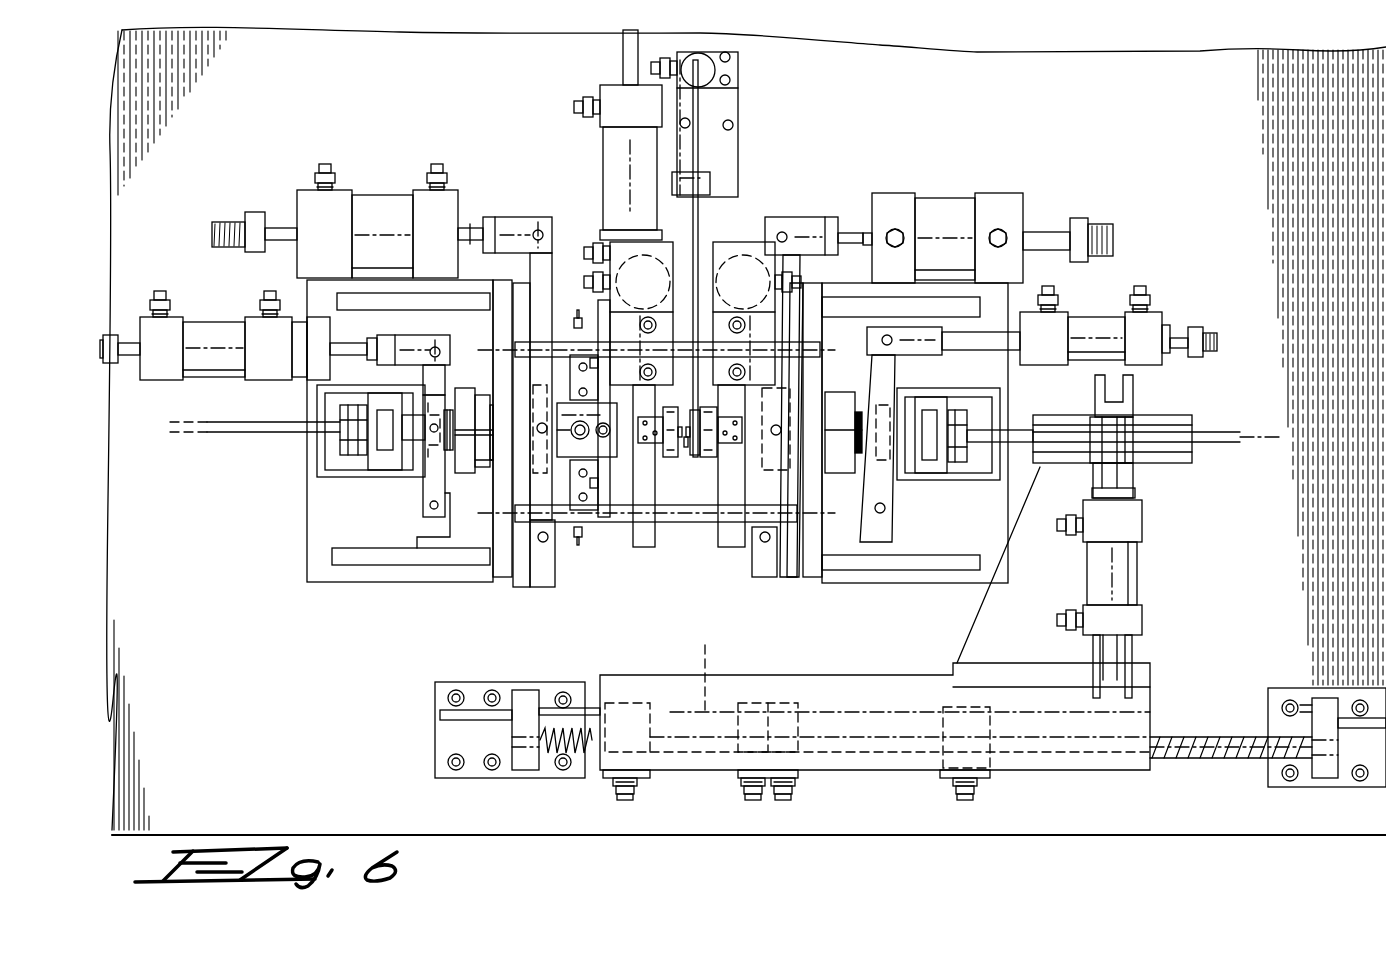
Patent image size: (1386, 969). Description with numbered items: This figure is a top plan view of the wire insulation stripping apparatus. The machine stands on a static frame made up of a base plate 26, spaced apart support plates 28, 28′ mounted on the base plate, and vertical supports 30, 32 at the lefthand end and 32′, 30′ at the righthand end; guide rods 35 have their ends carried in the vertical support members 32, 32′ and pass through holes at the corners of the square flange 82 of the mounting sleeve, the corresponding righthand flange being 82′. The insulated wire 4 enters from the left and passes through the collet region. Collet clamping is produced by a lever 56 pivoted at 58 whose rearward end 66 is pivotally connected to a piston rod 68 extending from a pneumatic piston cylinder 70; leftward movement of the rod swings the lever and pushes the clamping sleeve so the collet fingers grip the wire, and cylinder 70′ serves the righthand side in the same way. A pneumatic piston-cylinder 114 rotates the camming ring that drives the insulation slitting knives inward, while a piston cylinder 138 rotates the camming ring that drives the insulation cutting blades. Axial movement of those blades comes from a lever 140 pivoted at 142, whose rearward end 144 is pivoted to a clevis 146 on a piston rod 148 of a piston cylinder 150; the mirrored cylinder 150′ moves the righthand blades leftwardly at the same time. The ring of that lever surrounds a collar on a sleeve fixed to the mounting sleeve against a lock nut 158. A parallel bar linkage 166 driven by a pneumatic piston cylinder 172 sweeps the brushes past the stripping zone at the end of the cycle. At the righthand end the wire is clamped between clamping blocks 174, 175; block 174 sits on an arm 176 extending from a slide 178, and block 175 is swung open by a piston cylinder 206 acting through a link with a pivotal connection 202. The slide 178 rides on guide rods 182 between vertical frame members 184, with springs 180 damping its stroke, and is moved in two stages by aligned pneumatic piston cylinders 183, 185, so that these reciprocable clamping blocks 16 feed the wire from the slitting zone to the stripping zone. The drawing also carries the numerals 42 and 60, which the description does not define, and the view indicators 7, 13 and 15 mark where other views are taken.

The insulated wire 4 is at (237, 435).
The section line 7 is at (292, 430).
The section line 13 is at (1241, 320).
The section line 15 is at (438, 813).
The reciprocable clamping blocks 16 is at (1180, 410).
The base plate 26 is at (740, 823).
The support plate 28 is at (310, 530).
The support plate 28′ is at (888, 578).
The vertical support 30 is at (385, 462).
The vertical support 30′ is at (925, 465).
The vertical support 32 is at (500, 580).
The vertical support 32′ is at (810, 573).
The guide rods 35 is at (618, 515).
The collet nut 42 is at (347, 438).
The lever 56 is at (430, 380).
The pivot 58 is at (430, 506).
The bracket 60 is at (427, 530).
The rearward end of lever 66 is at (438, 346).
The piston rod 68 is at (376, 346).
The pneumatic piston cylinder 70 is at (205, 330).
The pneumatic piston cylinder 70′ is at (1118, 325).
The square flange 82 is at (652, 540).
The square flange 82′ is at (730, 533).
The pneumatic piston-cylinder 114 is at (607, 138).
The piston cylinder 138 is at (617, 262).
The lever 140 is at (547, 492).
The pivot 142 is at (543, 545).
The rearward end of lever 144 is at (541, 230).
The clevis 146 is at (510, 220).
The piston rod 148 is at (470, 230).
The piston cylinder 150 is at (376, 202).
The piston cylinder 150′ is at (950, 205).
The lock nut 158 is at (466, 395).
The parallel bar linkage 166 is at (700, 205).
The pneumatic piston cylinder 172 is at (712, 70).
The clamping block 174 is at (1185, 452).
The clamping block 175 is at (1195, 423).
The arm 176 is at (1135, 480).
The slide 178 is at (838, 680).
The springs 180 is at (1187, 742).
The guide rods 182 is at (1222, 738).
The pneumatic piston cylinder 183 is at (705, 665).
The vertical frame members 184 is at (523, 763).
The pneumatic piston cylinder 185 is at (893, 700).
The pivotal connection 202 is at (1135, 385).
The piston cylinder 206 is at (1130, 570).